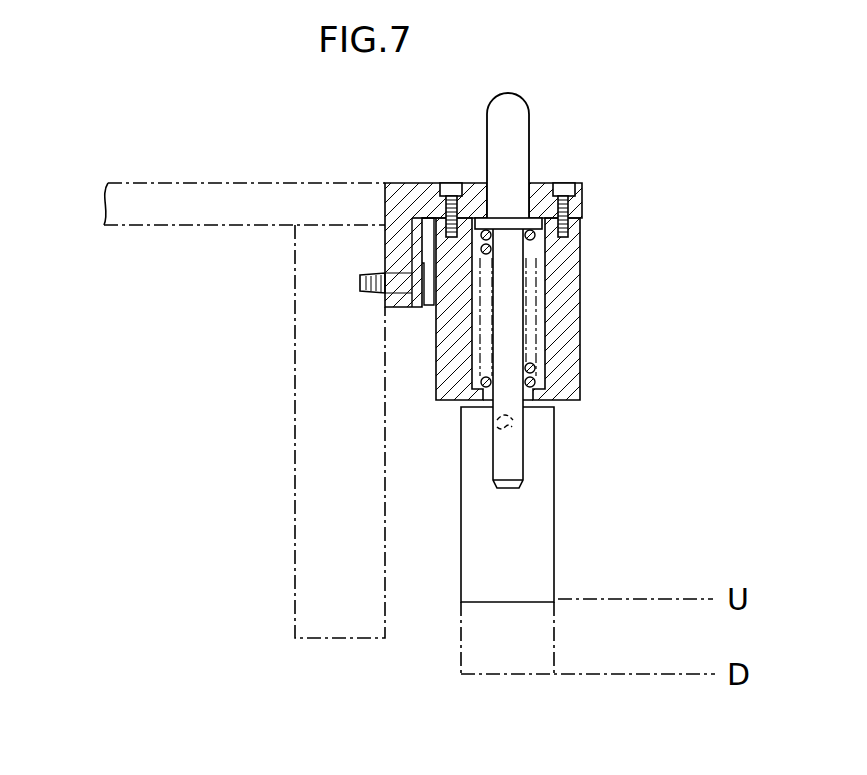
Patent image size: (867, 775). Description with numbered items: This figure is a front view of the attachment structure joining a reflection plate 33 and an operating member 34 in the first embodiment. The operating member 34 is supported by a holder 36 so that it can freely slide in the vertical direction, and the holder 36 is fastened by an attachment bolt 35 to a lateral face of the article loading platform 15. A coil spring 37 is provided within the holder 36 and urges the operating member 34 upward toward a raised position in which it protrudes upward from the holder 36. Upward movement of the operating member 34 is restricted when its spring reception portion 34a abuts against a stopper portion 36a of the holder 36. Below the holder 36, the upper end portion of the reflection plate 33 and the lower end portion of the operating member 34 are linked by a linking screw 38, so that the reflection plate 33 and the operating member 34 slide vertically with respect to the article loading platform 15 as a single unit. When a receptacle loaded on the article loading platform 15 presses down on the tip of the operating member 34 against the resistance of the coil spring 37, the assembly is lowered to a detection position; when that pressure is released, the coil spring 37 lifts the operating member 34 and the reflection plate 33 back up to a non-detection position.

The article loading platform 15 is at (193, 182).
The reflection plate 33 is at (533, 535).
The operating member 34 is at (515, 132).
The spring reception portion 34a is at (507, 217).
The attachment bolt 35 is at (360, 283).
The holder 36 is at (574, 270).
The stopper portion 36a is at (477, 215).
The coil spring 37 is at (540, 378).
The linking screw 38 is at (520, 436).